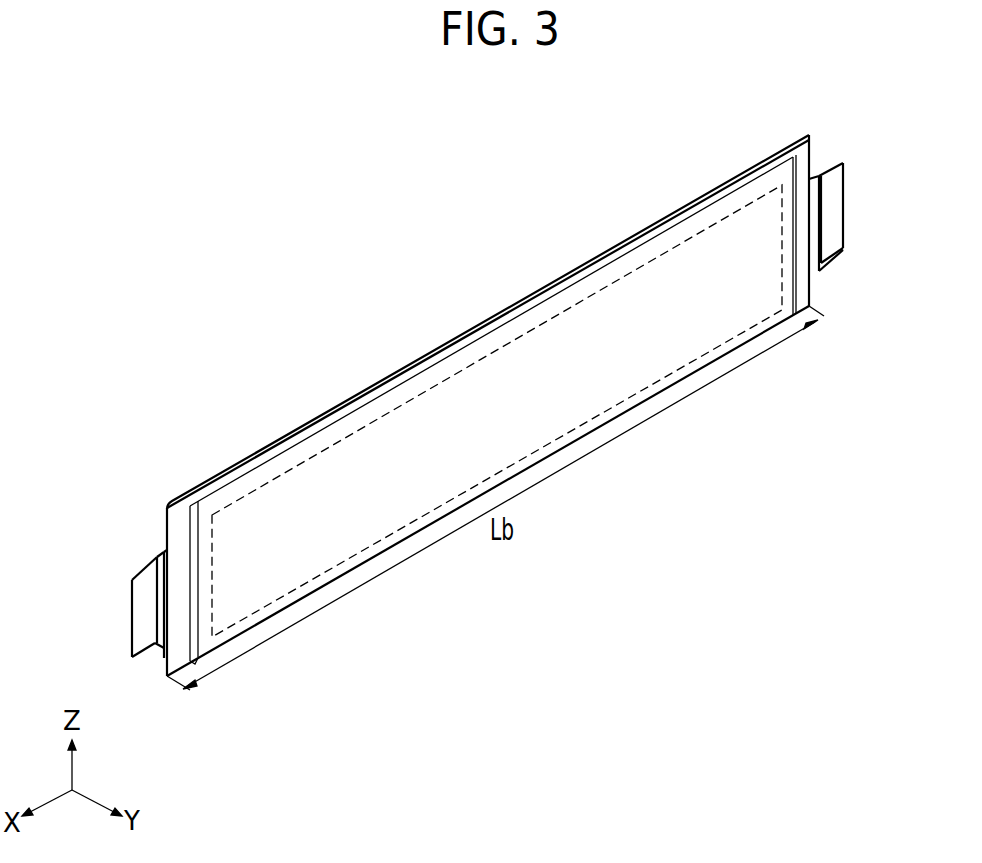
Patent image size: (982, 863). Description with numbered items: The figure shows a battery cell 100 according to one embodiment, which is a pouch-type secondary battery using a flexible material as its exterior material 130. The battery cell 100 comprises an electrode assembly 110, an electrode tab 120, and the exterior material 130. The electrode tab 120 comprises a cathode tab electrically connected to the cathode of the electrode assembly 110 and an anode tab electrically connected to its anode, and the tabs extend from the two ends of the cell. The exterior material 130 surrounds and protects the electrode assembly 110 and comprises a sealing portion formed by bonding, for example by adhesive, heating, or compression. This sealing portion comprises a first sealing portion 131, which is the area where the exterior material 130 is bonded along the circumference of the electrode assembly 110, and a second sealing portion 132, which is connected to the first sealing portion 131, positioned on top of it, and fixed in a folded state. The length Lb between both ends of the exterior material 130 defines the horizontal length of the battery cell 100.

The battery cell 100 is at (350, 100).
The electrode assembly 110 is at (607, 288).
The electrode tab 120 is at (145, 599).
The exterior material 130 is at (508, 291).
The first sealing portion 131 is at (178, 537).
The second sealing portion 132 is at (233, 473).